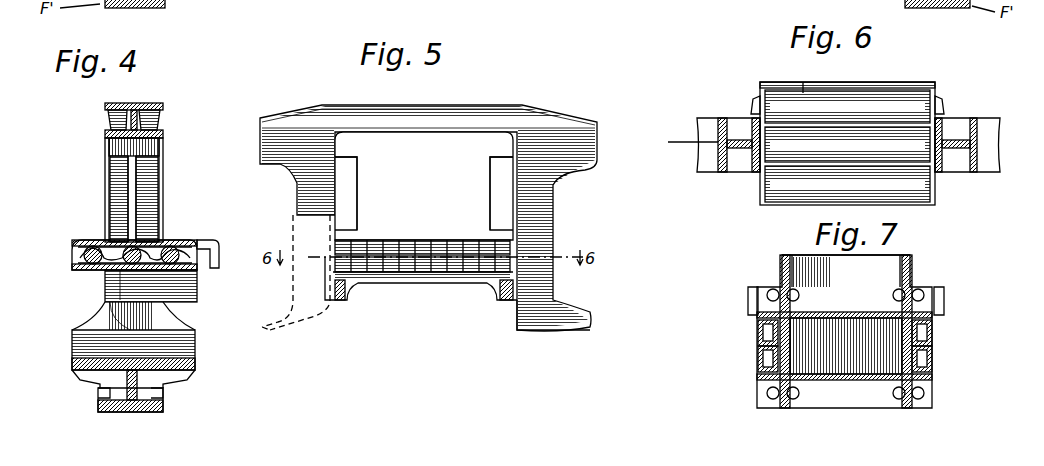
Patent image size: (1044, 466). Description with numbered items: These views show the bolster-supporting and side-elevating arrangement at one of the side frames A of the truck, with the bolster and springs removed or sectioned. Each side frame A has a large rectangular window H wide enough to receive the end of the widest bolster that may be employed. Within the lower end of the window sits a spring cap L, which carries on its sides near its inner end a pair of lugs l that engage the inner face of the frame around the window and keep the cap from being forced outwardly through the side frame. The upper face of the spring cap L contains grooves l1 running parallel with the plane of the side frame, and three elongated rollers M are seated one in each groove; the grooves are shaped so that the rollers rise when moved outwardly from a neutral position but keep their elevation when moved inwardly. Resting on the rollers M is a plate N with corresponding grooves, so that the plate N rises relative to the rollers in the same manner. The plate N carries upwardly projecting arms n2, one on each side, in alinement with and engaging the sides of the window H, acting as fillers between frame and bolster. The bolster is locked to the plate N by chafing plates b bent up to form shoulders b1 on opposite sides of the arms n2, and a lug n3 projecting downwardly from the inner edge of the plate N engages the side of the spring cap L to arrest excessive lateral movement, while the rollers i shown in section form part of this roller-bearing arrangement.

In FIG. 4, the upwardly projecting arms n2 is at (118, 178).
In FIG. 5, the upwardly projecting arms n2 is at (340, 204).
In FIG. 7, the upwardly projecting arms n2 is at (758, 346).
In FIG. 4, the spring cap L is at (72, 258).
In FIG. 5, the spring cap L is at (427, 265).
In FIG. 6, the spring cap L is at (875, 78).
In FIG. 4, the elongated rollers M is at (155, 245).
In FIG. 4, the plate N is at (176, 246).
In FIG. 5, the plate N is at (404, 244).
In FIG. 4, the lug n3 is at (213, 252).
In FIG. 5, the window H is at (440, 94).
In FIG. 5, the lugs l is at (327, 302).
In FIG. 6, the lugs l is at (748, 106).
In FIG. 7, the lugs l is at (750, 310).
In FIG. 6, the side frames A is at (678, 145).
In FIG. 6, the grooves l1 is at (803, 93).
In FIG. 6, the roller i is at (847, 146).
In FIG. 7, the chafing plates b is at (776, 286).
In FIG. 7, the shoulders b1 is at (770, 316).